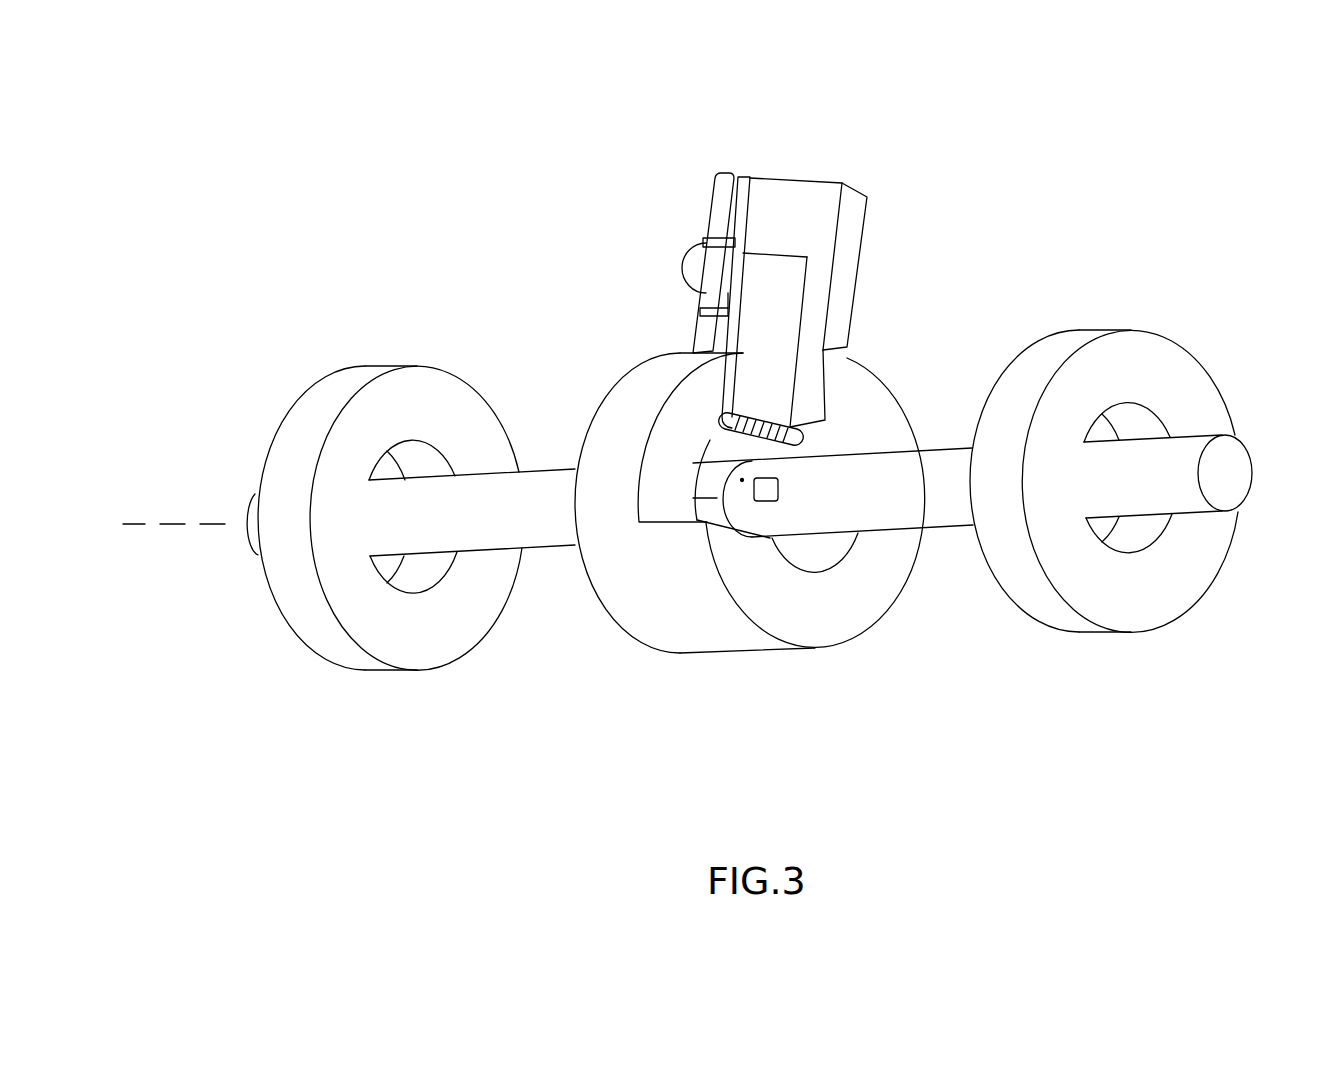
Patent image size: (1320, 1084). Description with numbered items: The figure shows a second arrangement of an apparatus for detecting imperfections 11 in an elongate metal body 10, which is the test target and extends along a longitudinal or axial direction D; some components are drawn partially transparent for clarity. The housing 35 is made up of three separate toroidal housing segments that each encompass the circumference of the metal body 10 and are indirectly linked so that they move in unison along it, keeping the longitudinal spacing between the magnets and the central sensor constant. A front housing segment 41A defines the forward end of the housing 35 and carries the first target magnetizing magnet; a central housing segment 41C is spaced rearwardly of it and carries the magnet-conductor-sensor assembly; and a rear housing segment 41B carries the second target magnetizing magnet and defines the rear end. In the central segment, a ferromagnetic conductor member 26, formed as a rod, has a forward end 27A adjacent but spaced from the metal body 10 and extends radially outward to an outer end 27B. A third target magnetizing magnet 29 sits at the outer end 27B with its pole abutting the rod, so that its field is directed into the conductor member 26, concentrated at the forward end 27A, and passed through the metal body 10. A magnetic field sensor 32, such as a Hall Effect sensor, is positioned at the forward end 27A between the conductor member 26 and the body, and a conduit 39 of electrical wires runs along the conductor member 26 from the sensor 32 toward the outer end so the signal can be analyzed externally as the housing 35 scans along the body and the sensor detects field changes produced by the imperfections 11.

The elongate metal body 10 is at (933, 448).
The imperfections 11 is at (781, 487).
The conductor member 26 is at (780, 282).
The forward end 27A is at (753, 402).
The outer end 27B is at (708, 247).
The third target magnetizing magnet 29 is at (788, 198).
The magnetic field sensor 32 is at (763, 423).
The housing 35 is at (749, 563).
The conduit 39 is at (738, 327).
The front housing segment 41A is at (383, 673).
The rear housing segment 41B is at (1097, 636).
The central housing segment 41C is at (720, 650).
The longitudinal or axial direction D is at (156, 514).